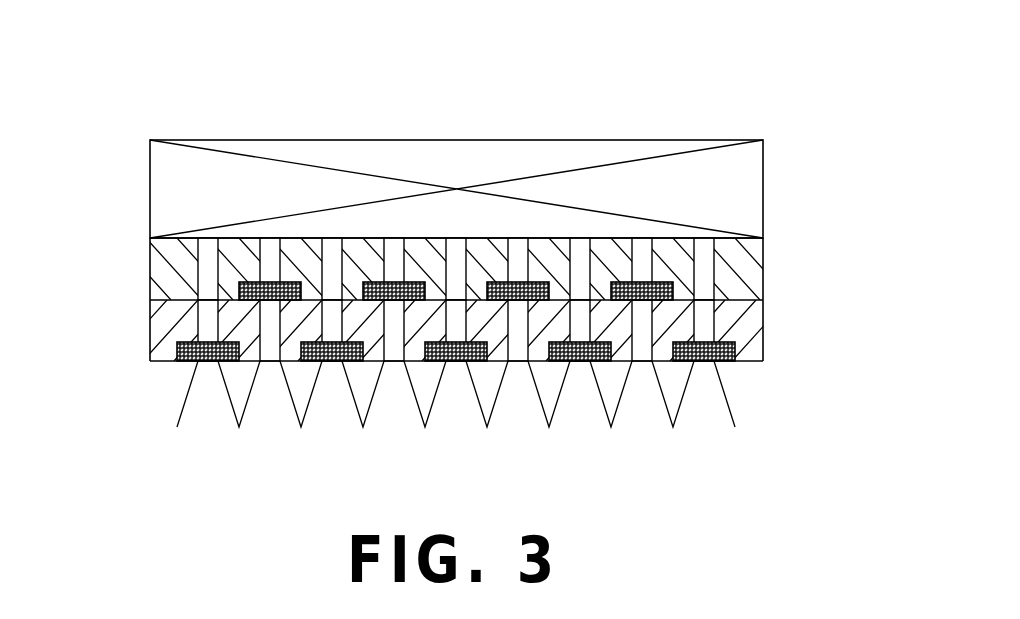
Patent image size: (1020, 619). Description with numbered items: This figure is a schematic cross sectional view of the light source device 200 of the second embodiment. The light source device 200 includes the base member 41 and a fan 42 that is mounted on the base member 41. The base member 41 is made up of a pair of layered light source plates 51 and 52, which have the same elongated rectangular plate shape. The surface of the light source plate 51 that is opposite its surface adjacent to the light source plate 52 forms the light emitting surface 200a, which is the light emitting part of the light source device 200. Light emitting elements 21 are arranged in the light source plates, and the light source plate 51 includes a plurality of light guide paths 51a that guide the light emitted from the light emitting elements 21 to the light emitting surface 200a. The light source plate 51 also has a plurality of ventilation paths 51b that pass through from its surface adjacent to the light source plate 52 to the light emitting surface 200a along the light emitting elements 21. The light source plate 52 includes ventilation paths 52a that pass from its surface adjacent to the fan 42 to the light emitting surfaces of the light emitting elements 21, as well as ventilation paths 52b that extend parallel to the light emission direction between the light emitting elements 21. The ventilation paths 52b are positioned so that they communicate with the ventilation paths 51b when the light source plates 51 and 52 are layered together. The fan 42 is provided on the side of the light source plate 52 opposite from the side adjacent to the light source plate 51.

The light source device 200 is at (467, 244).
The light emitting surface 200a is at (158, 362).
The fan 42 is at (763, 188).
The base member 41 is at (473, 351).
The light source plate 52 is at (763, 268).
The light source plate 51 is at (763, 327).
The ventilation paths 52a is at (268, 255).
The ventilation paths 52b is at (205, 280).
The ventilation paths 51b is at (205, 318).
The light guide paths 51a is at (268, 337).
The light emitting elements 21 is at (670, 280).